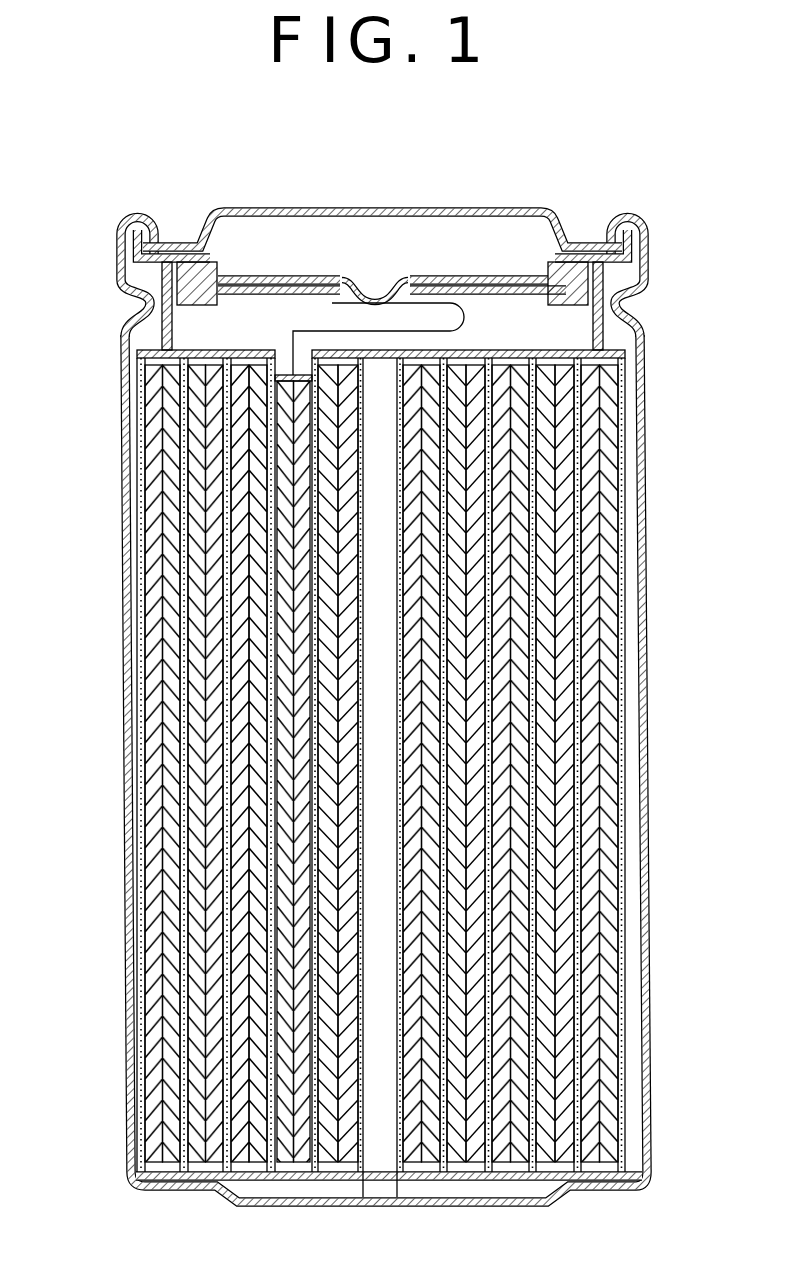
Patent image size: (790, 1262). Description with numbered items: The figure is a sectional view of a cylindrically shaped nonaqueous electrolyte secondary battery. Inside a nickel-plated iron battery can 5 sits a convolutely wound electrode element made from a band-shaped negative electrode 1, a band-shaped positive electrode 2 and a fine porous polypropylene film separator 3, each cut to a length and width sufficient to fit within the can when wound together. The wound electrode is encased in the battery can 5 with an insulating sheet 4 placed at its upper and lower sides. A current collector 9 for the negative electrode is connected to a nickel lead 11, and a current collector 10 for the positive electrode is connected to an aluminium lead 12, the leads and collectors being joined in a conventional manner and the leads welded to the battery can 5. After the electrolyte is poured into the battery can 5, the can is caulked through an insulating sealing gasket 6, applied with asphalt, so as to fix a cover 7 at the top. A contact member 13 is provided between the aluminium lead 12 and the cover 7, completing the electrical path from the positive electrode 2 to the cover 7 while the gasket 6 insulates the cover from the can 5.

The band-shaped negative electrode 1 is at (608, 495).
The band-shaped positive electrode 2 is at (565, 588).
The separator 3 is at (578, 680).
The insulating sheet 4 is at (608, 1182).
The battery can 5 is at (122, 545).
The insulating sealing gasket 6 is at (117, 240).
The cover 7 is at (331, 207).
The current collector for the negative electrode 9 is at (150, 675).
The current collector for the positive electrode 10 is at (210, 780).
The nickel lead 11 is at (246, 1207).
The aluminium lead 12 is at (466, 320).
The contact member 13 is at (378, 292).